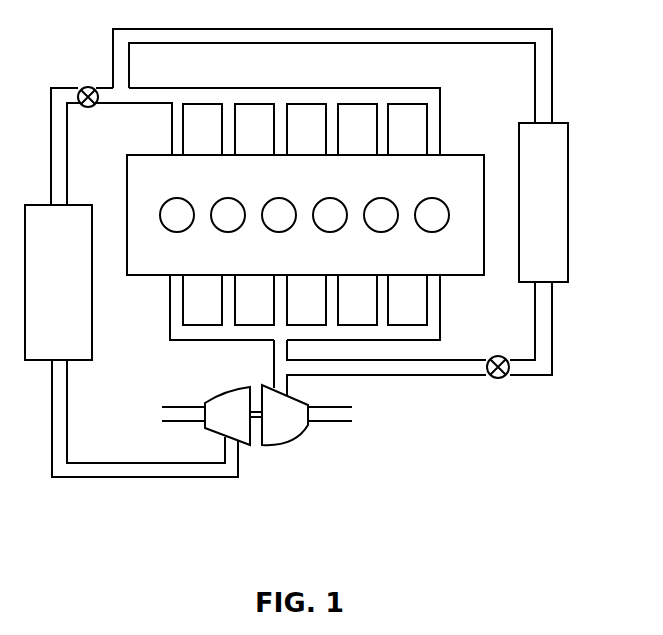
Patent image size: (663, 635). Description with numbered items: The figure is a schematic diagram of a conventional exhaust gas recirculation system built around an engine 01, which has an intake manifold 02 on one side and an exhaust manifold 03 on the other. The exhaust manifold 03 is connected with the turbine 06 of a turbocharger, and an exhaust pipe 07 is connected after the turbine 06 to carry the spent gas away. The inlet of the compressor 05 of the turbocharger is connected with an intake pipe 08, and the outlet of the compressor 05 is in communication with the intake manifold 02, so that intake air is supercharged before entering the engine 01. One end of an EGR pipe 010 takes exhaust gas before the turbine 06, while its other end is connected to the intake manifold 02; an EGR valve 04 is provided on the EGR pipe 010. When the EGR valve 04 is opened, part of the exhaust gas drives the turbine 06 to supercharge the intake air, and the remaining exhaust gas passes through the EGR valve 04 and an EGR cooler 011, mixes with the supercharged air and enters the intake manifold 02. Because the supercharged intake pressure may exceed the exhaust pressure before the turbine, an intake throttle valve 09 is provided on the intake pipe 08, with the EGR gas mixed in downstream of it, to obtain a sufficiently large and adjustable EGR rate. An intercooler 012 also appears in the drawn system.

The engine 01 is at (305, 215).
The intake manifold 02 is at (280, 97).
The exhaust manifold 03 is at (428, 325).
The EGR valve 04 is at (495, 378).
The compressor 05 is at (243, 423).
The turbine 06 is at (283, 418).
The exhaust pipe 07 is at (345, 418).
The intake pipe 08 is at (172, 415).
The intake throttle valve 09 is at (86, 87).
The EGR pipe 010 is at (290, 36).
The EGR cooler 011 is at (543, 202).
The intercooler 012 is at (58, 282).